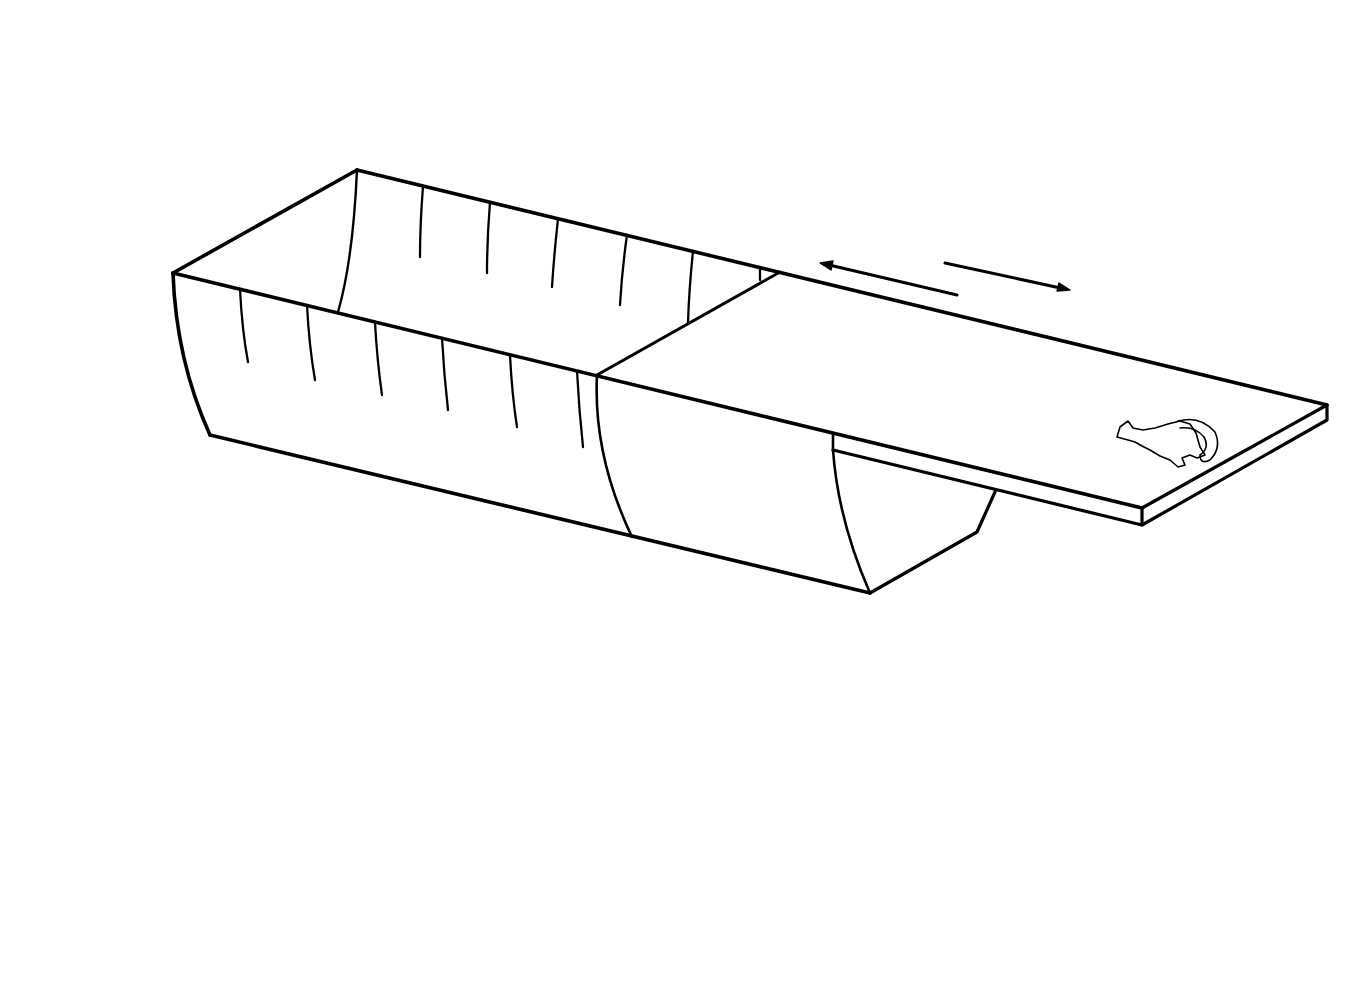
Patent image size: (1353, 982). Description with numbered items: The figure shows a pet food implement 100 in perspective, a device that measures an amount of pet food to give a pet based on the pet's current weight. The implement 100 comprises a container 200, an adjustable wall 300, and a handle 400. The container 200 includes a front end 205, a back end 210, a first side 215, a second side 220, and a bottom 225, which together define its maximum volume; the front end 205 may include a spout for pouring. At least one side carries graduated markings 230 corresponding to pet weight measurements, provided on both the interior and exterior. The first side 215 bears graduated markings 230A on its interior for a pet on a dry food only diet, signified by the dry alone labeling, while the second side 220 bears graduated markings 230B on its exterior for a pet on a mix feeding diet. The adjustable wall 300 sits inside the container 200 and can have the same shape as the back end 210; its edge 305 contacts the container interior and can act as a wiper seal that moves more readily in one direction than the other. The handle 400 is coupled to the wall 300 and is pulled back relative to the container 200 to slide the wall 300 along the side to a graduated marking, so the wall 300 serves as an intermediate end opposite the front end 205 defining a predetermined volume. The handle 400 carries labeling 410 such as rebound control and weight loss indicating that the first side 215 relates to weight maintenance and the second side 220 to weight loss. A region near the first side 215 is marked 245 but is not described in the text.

The pet food implement 100 is at (807, 137).
The container 200 is at (703, 517).
The front end 205 is at (270, 230).
The back end 210 is at (932, 525).
The first side 215 is at (523, 207).
The second side 220 is at (317, 427).
The bottom 225 is at (896, 586).
The graduated markings 230 is at (200, 319).
The graduated markings on interior of first side 230A is at (403, 222).
The graduated markings on exterior of second side 230B is at (217, 365).
The opening 245 is at (601, 226).
The adjustable wall 300 is at (633, 470).
The edge 305 is at (593, 457).
The handle 400 is at (1192, 370).
The labeling 410 is at (1003, 455).